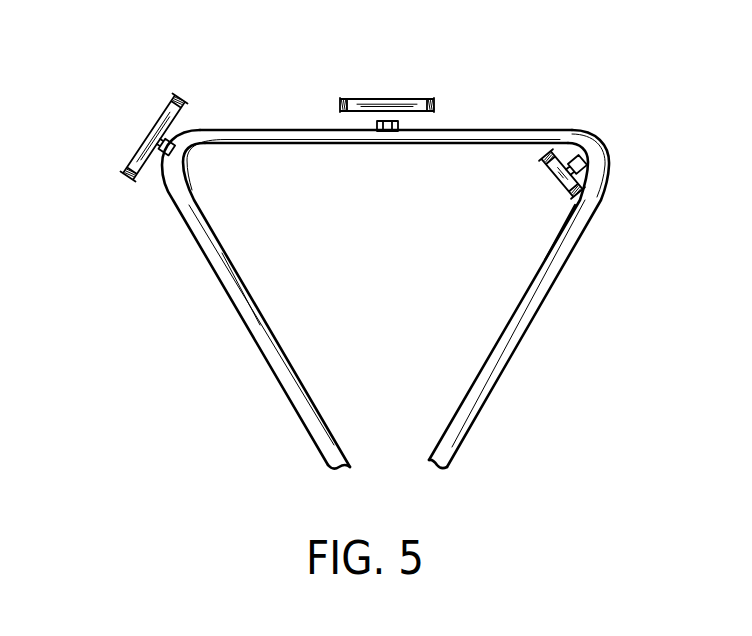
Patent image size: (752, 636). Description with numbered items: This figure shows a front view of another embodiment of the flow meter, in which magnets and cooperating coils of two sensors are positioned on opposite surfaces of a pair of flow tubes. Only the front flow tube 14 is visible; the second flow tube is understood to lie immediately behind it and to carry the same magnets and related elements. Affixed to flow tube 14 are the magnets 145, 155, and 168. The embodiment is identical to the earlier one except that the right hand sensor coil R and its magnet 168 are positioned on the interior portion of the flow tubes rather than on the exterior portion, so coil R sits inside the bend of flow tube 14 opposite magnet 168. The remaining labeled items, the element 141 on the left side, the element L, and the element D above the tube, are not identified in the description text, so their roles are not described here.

The flow tube 14 is at (544, 298).
The left mounting bracket 141 is at (147, 119).
The magnet 145 is at (161, 157).
The magnet 155 is at (378, 127).
The magnet 168 is at (578, 156).
The left plate L is at (150, 118).
The top plate D is at (392, 97).
The right hand sensor coil R is at (548, 187).